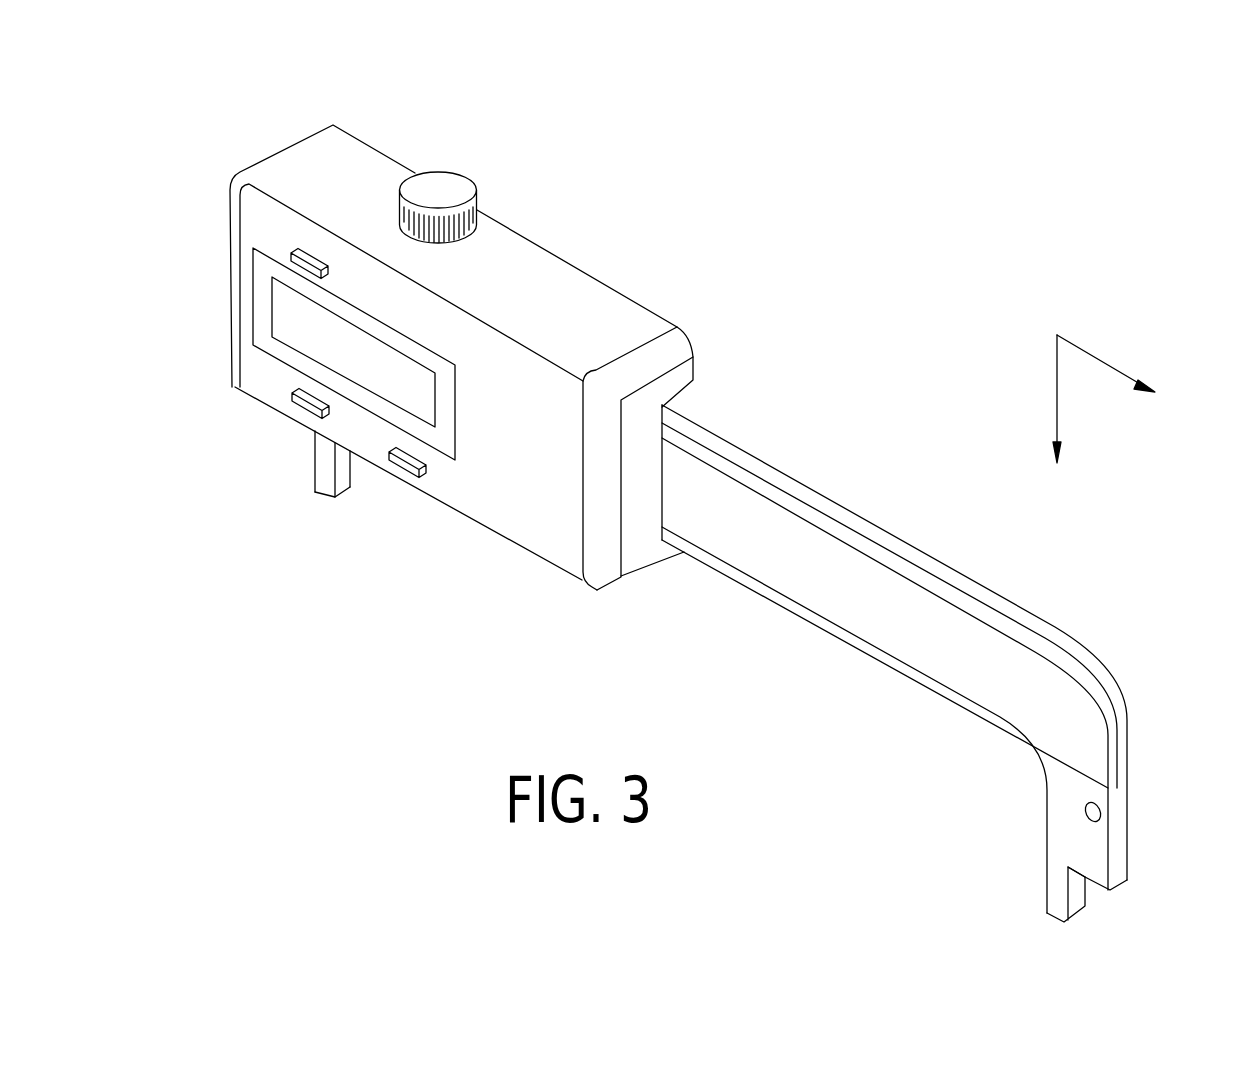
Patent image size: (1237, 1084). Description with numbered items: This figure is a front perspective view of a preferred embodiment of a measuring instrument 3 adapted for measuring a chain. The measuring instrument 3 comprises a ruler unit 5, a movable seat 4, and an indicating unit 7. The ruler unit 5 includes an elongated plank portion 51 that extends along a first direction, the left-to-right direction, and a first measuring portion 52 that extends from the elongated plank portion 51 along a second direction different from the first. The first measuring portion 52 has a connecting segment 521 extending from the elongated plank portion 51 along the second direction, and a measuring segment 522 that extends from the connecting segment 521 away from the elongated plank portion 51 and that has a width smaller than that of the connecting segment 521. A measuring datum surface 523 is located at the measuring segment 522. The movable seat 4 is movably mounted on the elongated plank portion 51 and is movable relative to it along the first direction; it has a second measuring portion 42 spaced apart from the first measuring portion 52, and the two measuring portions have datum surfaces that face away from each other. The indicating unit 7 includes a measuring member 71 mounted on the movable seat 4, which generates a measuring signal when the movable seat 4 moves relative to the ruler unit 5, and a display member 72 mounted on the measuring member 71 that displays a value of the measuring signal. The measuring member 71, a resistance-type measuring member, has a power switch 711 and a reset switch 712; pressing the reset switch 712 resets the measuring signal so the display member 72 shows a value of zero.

The measuring instrument 3 is at (611, 288).
The movable seat 4 is at (315, 452).
The second measuring portion 42 is at (328, 476).
The ruler unit 5 is at (878, 556).
The elongated plank portion 51 is at (992, 657).
The first measuring portion 52 is at (1118, 807).
The connecting segment 521 is at (1065, 802).
The measuring segment 522 is at (1062, 893).
The measuring datum surface 523 is at (1081, 907).
The indicating unit 7 is at (360, 140).
The measuring member 71 is at (312, 182).
The power switch 711 is at (293, 398).
The reset switch 712 is at (398, 474).
The display member 72 is at (293, 318).